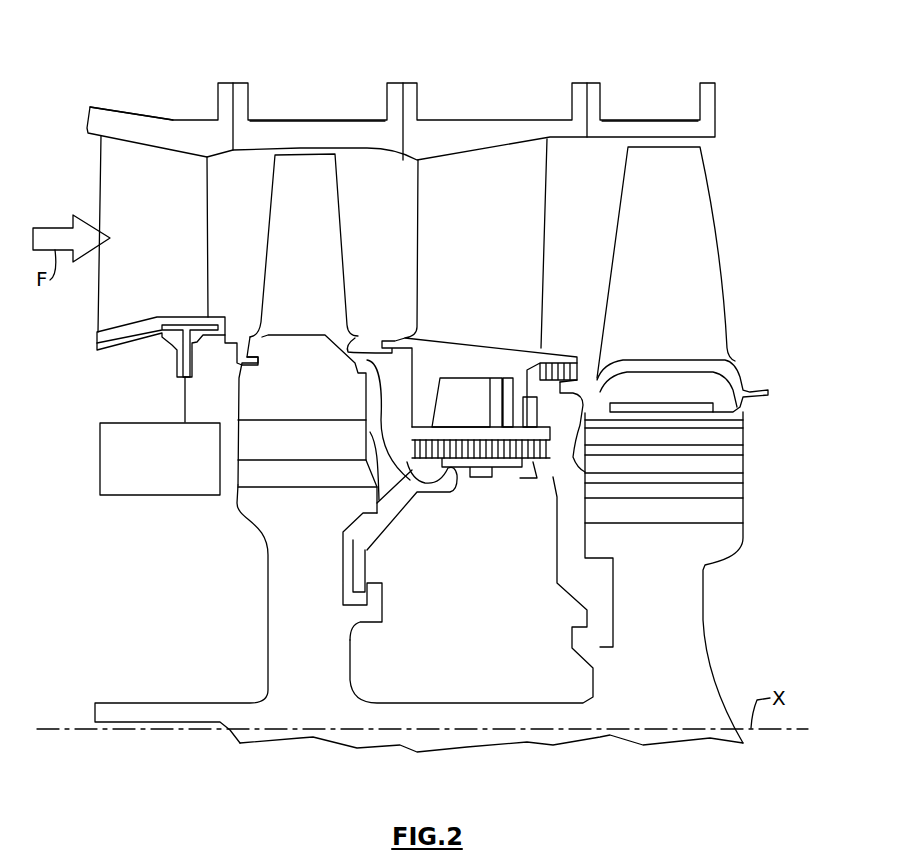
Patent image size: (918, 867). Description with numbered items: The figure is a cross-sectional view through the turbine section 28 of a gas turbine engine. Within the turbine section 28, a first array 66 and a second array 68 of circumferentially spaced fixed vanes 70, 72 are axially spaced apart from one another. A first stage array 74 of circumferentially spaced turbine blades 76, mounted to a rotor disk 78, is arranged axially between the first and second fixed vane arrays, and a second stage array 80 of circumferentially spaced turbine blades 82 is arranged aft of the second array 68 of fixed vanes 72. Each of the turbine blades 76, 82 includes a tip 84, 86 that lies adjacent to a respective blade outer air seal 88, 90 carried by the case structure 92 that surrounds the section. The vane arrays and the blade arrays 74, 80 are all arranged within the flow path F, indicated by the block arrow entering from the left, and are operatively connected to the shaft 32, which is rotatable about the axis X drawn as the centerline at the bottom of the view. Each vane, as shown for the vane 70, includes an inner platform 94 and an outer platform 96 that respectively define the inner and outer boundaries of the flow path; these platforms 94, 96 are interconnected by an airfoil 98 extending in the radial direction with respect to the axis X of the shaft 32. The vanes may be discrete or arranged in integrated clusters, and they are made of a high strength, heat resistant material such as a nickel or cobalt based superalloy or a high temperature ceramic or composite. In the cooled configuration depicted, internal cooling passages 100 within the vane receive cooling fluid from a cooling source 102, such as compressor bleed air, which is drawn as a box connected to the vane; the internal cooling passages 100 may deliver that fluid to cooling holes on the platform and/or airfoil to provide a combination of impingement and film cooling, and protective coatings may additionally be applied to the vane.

The turbine section 28 is at (506, 80).
The shaft 32 is at (93, 720).
The first array of fixed vanes 66 is at (95, 212).
The second array of fixed vanes 68 is at (418, 202).
The fixed vane 70 is at (100, 170).
The fixed vane 72 is at (432, 246).
The first stage array of turbine blades 74 is at (270, 226).
The turbine blade 76 is at (280, 262).
The rotor disk 78 is at (335, 648).
The second stage array of turbine blades 80 is at (612, 228).
The turbine blade 82 is at (628, 272).
The tip 84 is at (301, 153).
The tip 86 is at (655, 146).
The blade outer air seal 88 is at (262, 137).
The blade outer air seal 90 is at (617, 127).
The case structure 92 is at (722, 106).
The inner platform 94 is at (107, 350).
The outer platform 96 is at (118, 126).
The airfoil 98 is at (110, 272).
The internal cooling passages 100 is at (170, 317).
The cooling source 102 is at (122, 497).